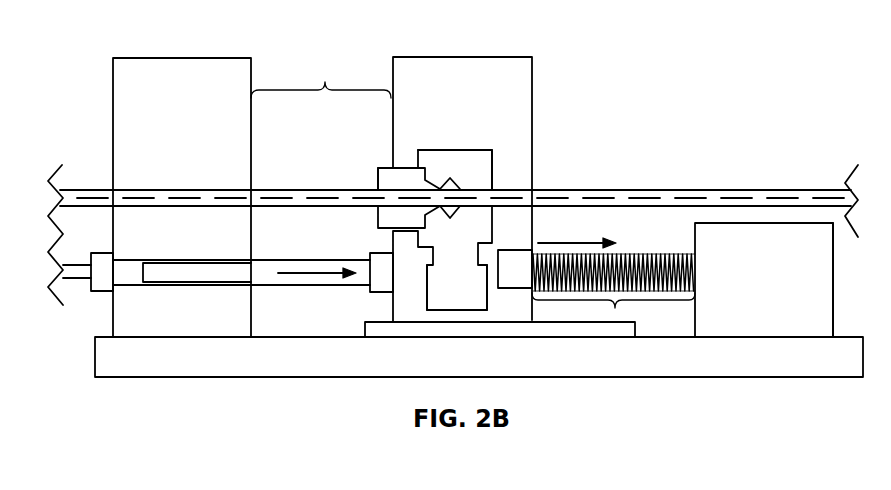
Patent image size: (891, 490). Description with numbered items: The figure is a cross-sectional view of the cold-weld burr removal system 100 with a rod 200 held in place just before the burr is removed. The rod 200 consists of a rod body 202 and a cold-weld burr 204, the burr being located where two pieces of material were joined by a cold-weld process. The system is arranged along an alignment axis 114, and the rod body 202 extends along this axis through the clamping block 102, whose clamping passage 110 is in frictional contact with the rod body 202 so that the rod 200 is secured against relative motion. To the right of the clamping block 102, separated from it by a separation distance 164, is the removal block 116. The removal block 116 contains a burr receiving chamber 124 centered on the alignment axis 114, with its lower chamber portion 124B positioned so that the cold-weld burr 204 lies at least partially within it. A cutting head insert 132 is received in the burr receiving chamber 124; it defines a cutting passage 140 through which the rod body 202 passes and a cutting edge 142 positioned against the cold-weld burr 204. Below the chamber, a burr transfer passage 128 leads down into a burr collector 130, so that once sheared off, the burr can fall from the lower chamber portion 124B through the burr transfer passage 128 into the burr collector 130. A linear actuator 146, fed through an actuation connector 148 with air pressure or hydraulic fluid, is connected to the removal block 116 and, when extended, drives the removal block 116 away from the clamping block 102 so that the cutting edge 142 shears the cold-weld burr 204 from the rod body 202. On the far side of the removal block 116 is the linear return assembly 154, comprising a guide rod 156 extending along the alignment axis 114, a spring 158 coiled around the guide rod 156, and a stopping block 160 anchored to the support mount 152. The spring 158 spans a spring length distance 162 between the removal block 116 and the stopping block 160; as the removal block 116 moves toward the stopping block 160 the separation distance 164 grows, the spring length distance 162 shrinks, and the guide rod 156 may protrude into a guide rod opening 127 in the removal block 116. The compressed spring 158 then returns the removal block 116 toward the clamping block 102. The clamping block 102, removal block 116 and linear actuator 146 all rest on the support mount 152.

The cold-weld burr removal system 100 is at (700, 92).
The clamping block 102 is at (132, 100).
The clamping passage 110 is at (173, 189).
The alignment axis 114 is at (98, 195).
The removal block 116 is at (502, 80).
The burr receiving chamber 124 is at (483, 180).
The lower chamber portion 124B is at (453, 237).
The guide rod opening 127 is at (523, 290).
The burr transfer passage 128 is at (462, 258).
The burr collector 130 is at (437, 288).
The cutting head insert 132 is at (395, 168).
The cutting passage 140 is at (387, 187).
The cutting edge 142 is at (446, 183).
The linear actuator 146 is at (315, 282).
The actuation connector 148 is at (103, 278).
The support mount 152 is at (153, 355).
The linear return assembly 154 is at (750, 248).
The guide rod 156 is at (633, 253).
The spring 158 is at (678, 253).
The stopping block 160 is at (810, 265).
The spring length distance 162 is at (615, 310).
The separation distance 164 is at (325, 82).
The rod 200 is at (582, 189).
The rod body 202 is at (282, 189).
The cold-weld burr 204 is at (458, 188).